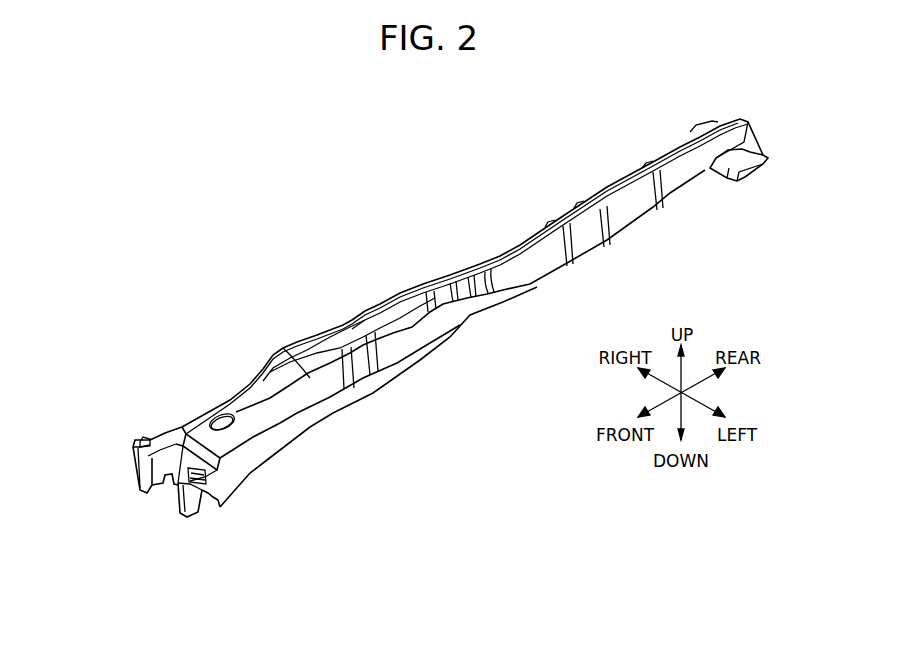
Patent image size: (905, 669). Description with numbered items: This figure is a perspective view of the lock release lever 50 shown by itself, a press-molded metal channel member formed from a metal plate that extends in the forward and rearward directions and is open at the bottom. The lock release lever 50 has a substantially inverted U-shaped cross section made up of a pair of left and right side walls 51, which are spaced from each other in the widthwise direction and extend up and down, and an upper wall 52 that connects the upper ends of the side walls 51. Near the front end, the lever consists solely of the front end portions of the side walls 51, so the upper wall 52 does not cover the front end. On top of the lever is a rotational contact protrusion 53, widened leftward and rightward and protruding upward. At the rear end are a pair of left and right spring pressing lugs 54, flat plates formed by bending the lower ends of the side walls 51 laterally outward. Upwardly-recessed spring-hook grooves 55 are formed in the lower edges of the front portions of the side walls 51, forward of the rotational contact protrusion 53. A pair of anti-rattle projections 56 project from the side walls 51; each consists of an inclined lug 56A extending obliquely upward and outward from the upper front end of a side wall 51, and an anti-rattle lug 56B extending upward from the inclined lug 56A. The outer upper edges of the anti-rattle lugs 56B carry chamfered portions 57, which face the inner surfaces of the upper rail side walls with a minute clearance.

The lock release lever 50 is at (328, 215).
The side walls 51 is at (192, 448).
The upper wall 52 is at (258, 397).
The rotational contact protrusion 53 is at (308, 353).
The spring pressing lugs 54 is at (765, 150).
The spring-hook grooves 55 is at (162, 493).
The anti-rattle projections 56 is at (143, 383).
The inclined lugs 56A is at (128, 460).
The anti-rattle lugs 56B is at (138, 440).
The chamfered portions 57 is at (146, 436).